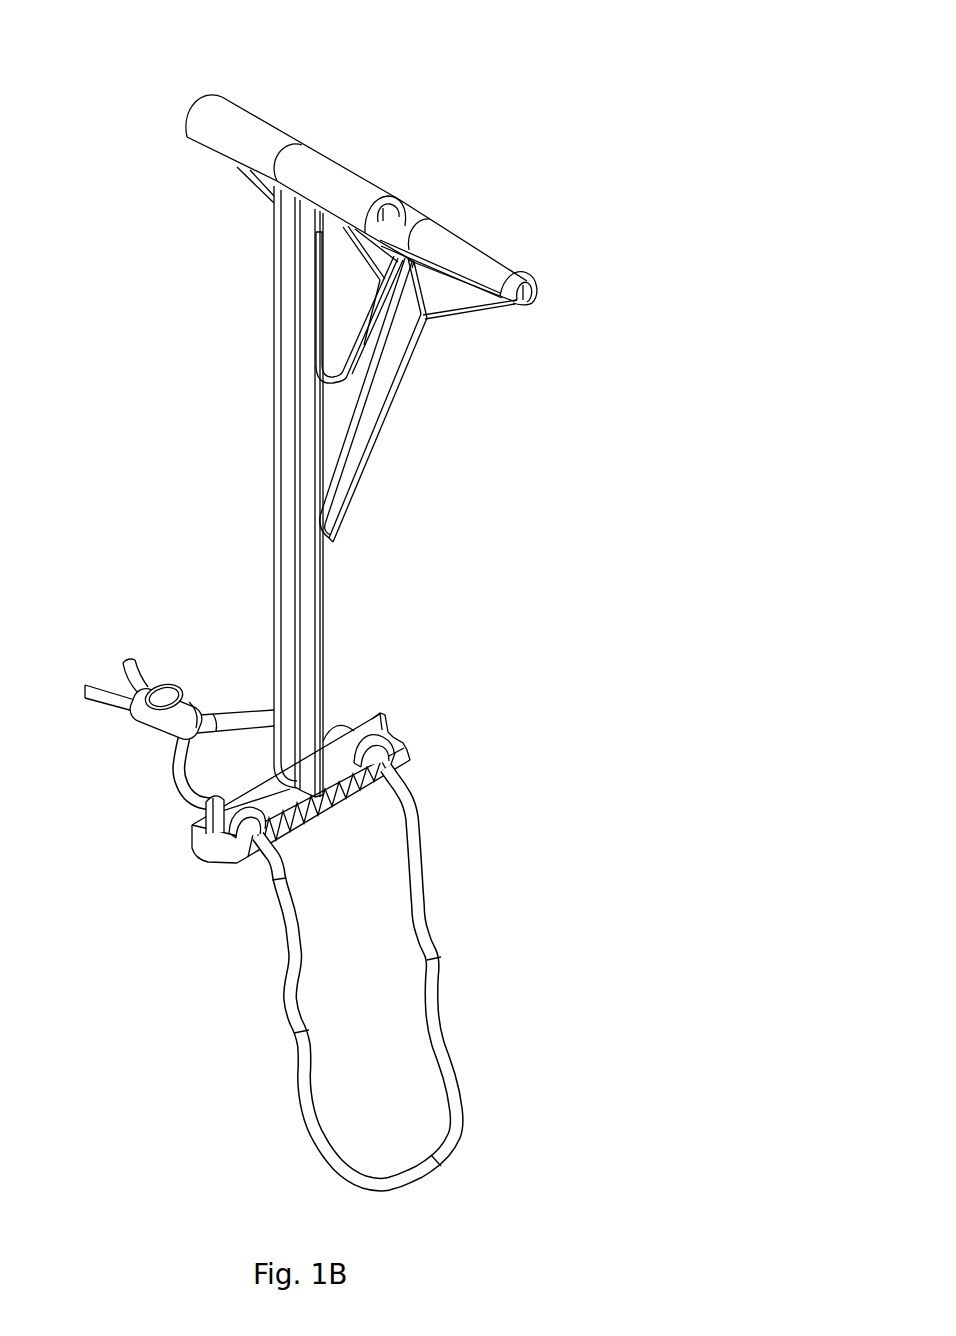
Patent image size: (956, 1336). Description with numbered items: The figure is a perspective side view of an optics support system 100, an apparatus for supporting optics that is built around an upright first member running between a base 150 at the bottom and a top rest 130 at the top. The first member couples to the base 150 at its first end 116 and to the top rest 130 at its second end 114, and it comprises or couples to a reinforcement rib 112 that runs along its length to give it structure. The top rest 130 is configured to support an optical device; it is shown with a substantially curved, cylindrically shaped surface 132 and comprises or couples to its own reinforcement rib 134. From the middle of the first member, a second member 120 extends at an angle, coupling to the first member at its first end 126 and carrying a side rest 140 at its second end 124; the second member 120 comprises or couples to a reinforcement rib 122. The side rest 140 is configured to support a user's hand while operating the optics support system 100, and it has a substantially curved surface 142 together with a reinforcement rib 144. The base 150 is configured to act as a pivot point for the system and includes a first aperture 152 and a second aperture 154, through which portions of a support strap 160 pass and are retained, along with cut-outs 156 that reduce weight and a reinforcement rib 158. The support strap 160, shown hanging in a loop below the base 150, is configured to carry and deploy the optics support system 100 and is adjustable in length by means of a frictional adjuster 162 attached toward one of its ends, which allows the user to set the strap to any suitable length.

The optics support system 100 is at (485, 129).
The reinforcement rib 112 is at (311, 588).
The second end 114 is at (270, 204).
The first end 116 is at (298, 788).
The second member 120 is at (430, 400).
The reinforcement rib 122 is at (348, 452).
The second end 124 is at (409, 275).
The first end 126 is at (401, 521).
The top rest 130 is at (359, 198).
The substantially curved surface 132 is at (280, 122).
The reinforcement rib 134 is at (312, 226).
The side rest 140 is at (567, 316).
The substantially curved surface 142 is at (483, 240).
The reinforcement rib 144 is at (457, 290).
The base 150 is at (333, 778).
The first aperture 152 is at (393, 747).
The second aperture 154 is at (242, 836).
The cut-outs 156 is at (289, 838).
The reinforcement rib 158 is at (207, 816).
The support strap 160 is at (468, 1140).
The frictional adjuster 162 is at (135, 718).